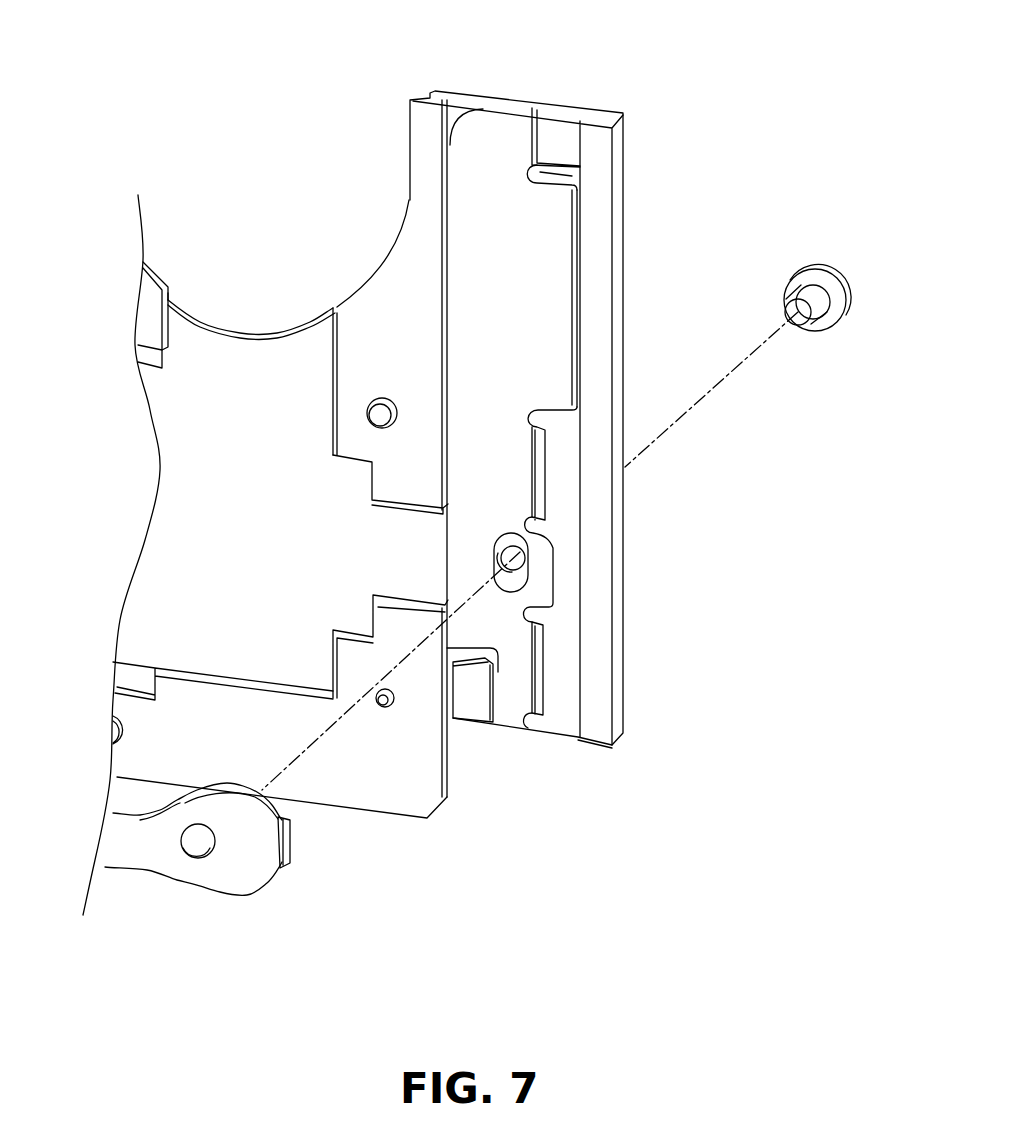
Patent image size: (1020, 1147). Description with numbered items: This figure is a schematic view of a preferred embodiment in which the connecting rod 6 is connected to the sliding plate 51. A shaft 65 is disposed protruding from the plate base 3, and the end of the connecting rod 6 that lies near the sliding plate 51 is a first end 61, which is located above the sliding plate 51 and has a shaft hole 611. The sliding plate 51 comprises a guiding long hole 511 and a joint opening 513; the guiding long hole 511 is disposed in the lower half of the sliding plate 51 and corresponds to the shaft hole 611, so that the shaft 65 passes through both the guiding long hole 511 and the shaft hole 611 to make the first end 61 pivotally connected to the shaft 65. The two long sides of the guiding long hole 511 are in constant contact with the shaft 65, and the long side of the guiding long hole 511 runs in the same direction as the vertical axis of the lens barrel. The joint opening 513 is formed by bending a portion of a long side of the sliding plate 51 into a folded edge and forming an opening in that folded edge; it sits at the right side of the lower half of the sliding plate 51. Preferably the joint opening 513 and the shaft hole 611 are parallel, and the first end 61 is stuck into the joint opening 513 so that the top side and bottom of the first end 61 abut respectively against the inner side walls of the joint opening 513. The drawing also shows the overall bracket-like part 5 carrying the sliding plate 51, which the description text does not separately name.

The plate base 3 is at (233, 324).
The bracket 5 is at (555, 382).
The sliding plate 51 is at (573, 262).
The guiding long hole 511 is at (527, 583).
The joint opening 513 is at (545, 627).
The connecting rod 6 is at (160, 873).
The first end 61 is at (238, 882).
The shaft hole 611 is at (198, 846).
The shaft 65 is at (850, 300).